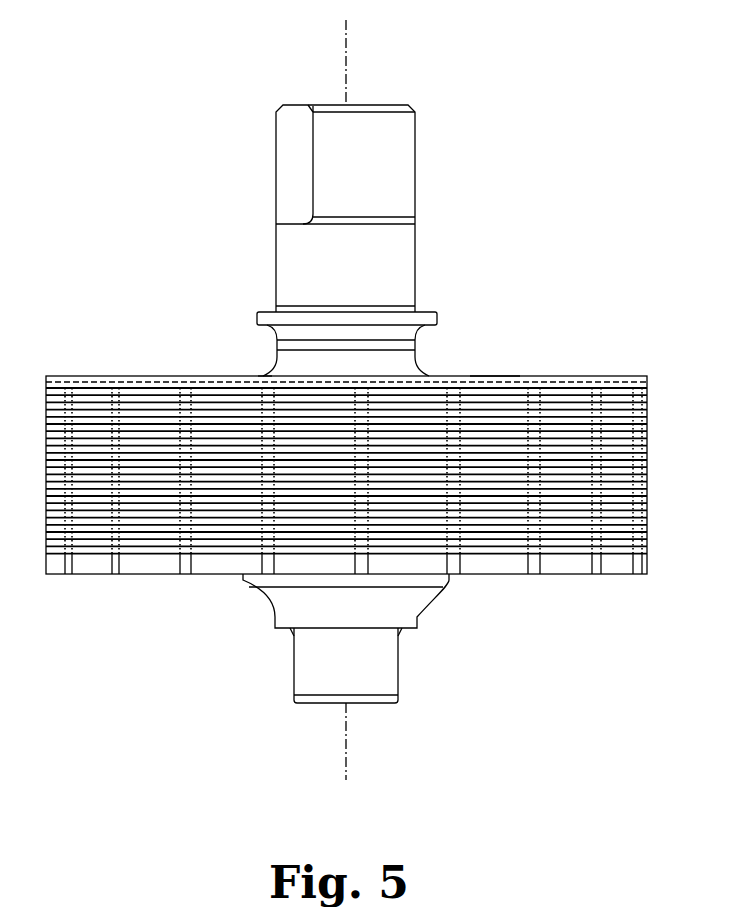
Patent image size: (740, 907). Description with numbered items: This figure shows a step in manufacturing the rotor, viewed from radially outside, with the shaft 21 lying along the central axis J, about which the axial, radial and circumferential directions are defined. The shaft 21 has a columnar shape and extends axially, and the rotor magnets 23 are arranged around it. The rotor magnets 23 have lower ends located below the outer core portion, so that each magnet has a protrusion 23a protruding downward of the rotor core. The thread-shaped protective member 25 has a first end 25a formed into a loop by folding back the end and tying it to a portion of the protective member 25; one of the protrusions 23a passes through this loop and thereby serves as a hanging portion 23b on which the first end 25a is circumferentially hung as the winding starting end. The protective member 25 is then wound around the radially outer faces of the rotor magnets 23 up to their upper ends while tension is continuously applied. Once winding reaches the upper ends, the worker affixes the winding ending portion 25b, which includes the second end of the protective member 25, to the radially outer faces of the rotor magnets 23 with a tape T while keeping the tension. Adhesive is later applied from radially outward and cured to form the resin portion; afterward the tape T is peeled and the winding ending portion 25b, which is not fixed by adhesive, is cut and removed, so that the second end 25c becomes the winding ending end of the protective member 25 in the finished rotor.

The central axis J is at (346, 58).
The tape T is at (492, 377).
The shaft 21 is at (387, 164).
The rotor magnet 23 is at (319, 584).
The protrusion 23a is at (423, 565).
The hanging portion 23b is at (337, 563).
The protective member 25 is at (210, 556).
The first end 25a is at (297, 553).
The winding ending portion 25b is at (557, 382).
The second end 25c is at (262, 377).